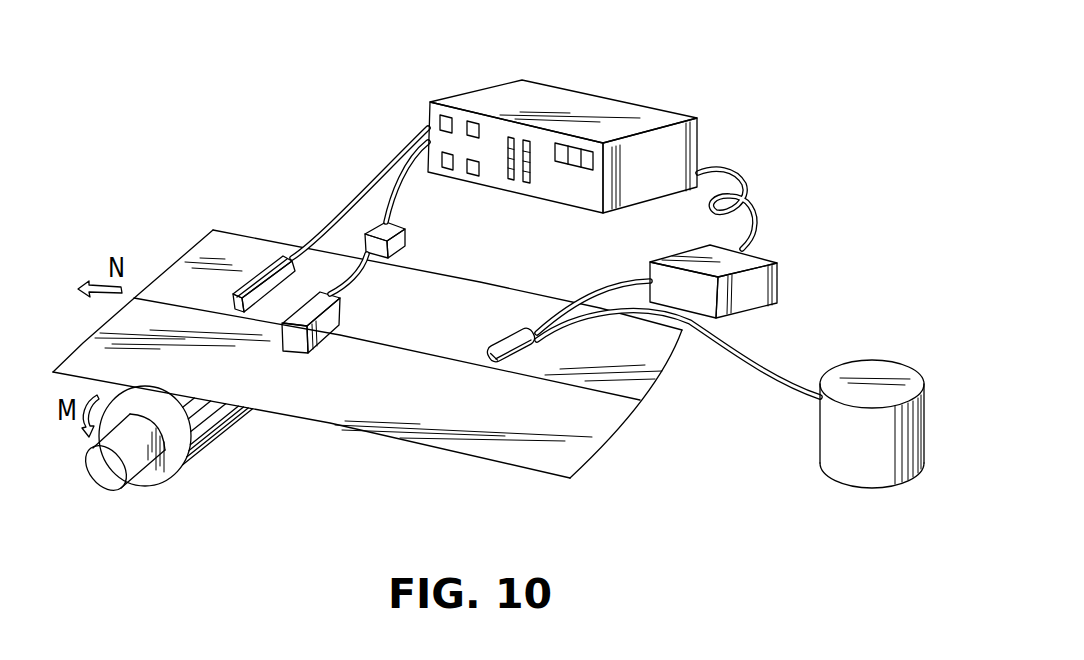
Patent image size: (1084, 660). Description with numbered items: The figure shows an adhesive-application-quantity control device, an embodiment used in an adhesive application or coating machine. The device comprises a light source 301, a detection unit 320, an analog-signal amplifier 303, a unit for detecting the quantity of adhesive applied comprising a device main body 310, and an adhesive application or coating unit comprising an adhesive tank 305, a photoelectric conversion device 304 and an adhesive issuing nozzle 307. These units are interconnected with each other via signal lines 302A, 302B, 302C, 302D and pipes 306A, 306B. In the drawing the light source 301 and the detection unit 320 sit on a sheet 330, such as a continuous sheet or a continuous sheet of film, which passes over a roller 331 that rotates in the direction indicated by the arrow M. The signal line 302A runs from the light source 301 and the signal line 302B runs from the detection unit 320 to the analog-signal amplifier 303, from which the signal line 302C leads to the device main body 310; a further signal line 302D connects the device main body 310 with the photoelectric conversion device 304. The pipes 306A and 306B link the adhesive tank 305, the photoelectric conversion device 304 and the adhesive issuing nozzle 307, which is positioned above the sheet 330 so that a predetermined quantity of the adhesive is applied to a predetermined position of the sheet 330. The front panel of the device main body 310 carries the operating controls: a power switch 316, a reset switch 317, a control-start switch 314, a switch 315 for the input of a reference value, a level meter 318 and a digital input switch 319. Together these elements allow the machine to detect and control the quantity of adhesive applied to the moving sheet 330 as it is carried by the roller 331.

The light source 301 is at (270, 262).
The signal line 302A is at (337, 217).
The signal line 302B is at (354, 280).
The signal line 302C is at (397, 187).
The signal line 302D is at (748, 178).
The analog-signal amplifier 303 is at (405, 240).
The photoelectric conversion device 304 is at (763, 251).
The adhesive tank 305 is at (867, 367).
The pipe 306A is at (733, 360).
The pipe 306B is at (581, 295).
The adhesive issuing nozzle 307 is at (495, 341).
The device main body 310 is at (590, 100).
The control-start switch 314 is at (441, 116).
The switch for the input of a reference value 315 is at (474, 122).
The power switch 316 is at (446, 170).
The reset switch 317 is at (474, 176).
The level meter 318 is at (526, 181).
The digital input switch 319 is at (582, 170).
The detection unit 320 is at (320, 330).
The sheet 330 is at (438, 433).
The roller 331 is at (223, 437).